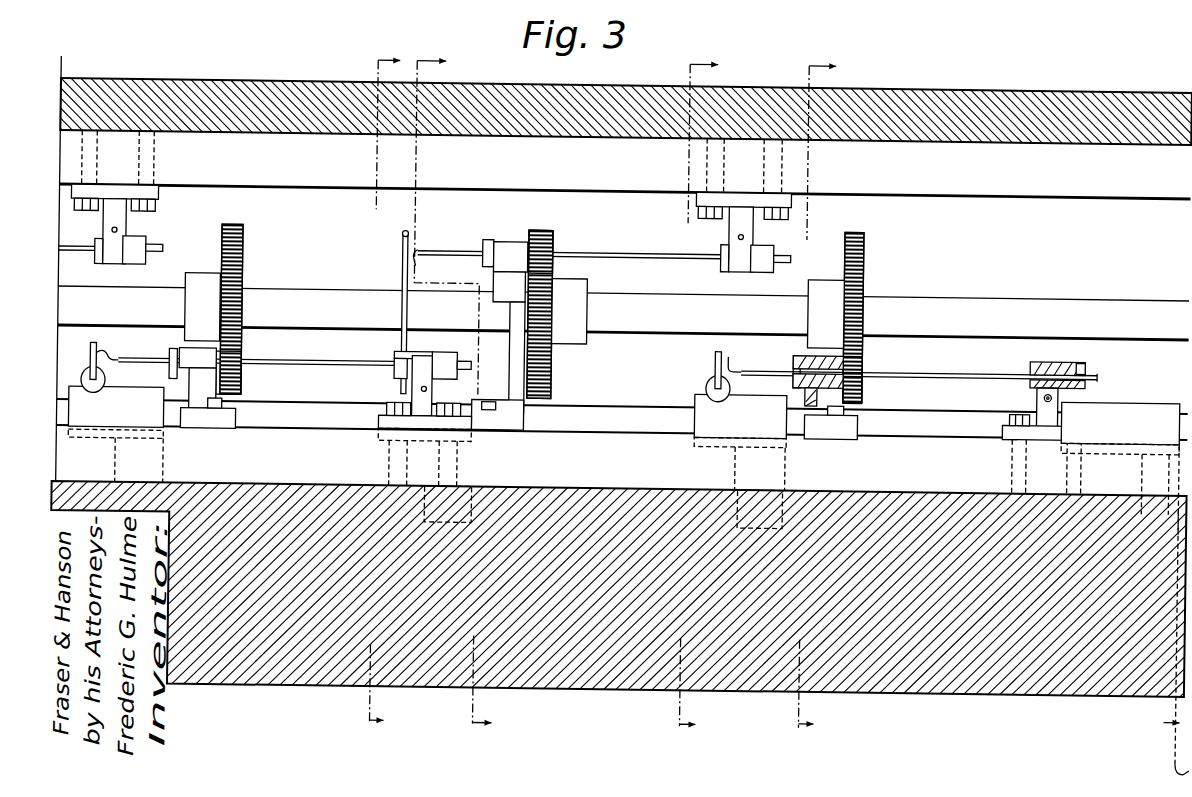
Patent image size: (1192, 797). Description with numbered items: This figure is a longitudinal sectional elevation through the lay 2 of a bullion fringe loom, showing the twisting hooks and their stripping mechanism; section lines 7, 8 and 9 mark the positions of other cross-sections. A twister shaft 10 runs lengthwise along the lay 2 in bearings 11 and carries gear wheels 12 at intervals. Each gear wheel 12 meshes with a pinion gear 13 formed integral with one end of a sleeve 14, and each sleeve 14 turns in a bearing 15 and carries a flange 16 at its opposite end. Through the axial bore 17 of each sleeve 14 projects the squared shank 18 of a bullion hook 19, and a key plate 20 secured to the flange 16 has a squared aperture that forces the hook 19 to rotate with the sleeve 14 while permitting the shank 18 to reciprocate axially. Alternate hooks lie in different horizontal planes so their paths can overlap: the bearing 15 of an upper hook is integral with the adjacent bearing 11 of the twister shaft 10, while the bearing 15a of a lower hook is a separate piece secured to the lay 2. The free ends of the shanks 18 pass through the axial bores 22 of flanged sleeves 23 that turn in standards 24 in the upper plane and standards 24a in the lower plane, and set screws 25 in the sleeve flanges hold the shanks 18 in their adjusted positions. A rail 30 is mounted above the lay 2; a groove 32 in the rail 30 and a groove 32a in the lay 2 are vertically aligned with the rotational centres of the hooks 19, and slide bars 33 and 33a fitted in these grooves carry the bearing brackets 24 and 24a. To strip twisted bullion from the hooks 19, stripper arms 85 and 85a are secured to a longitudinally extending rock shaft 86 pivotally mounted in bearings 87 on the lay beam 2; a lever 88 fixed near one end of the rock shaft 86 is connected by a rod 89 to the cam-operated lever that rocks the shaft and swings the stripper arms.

The lay 2 is at (285, 662).
The section line 7 is at (825, 396).
The section line 8 is at (708, 395).
The section line 9 is at (463, 392).
The twister shaft 10 is at (993, 279).
The bearing 11 is at (498, 312).
The gear wheel 12 is at (245, 265).
The pinion gear 13 is at (246, 360).
The sleeve 14 is at (850, 380).
The bearing 15 is at (508, 240).
The bearing 15a is at (192, 346).
The flange 16 is at (488, 238).
The axial bore 17 is at (920, 366).
The squared shank 18 is at (165, 250).
The bullion hook 19 is at (122, 358).
The key plate 20 is at (797, 376).
The axial bore 22 is at (1057, 350).
The flanged sleeve 23 is at (138, 264).
The bearing or standard 24 is at (128, 225).
The bearing or standard 24a is at (414, 353).
The set screw 25 is at (1090, 354).
The rail 30 is at (166, 84).
The groove 32 is at (893, 131).
The groove 32a is at (578, 481).
The slide bar 33 is at (300, 172).
The slide bar 33a is at (622, 436).
The stripper arm 85 is at (403, 231).
The stripper arm 85a is at (94, 350).
The rock shaft 86 is at (294, 404).
The bearing 87 is at (478, 453).
The lever 88 is at (1161, 392).
The rod 89 is at (1164, 643).